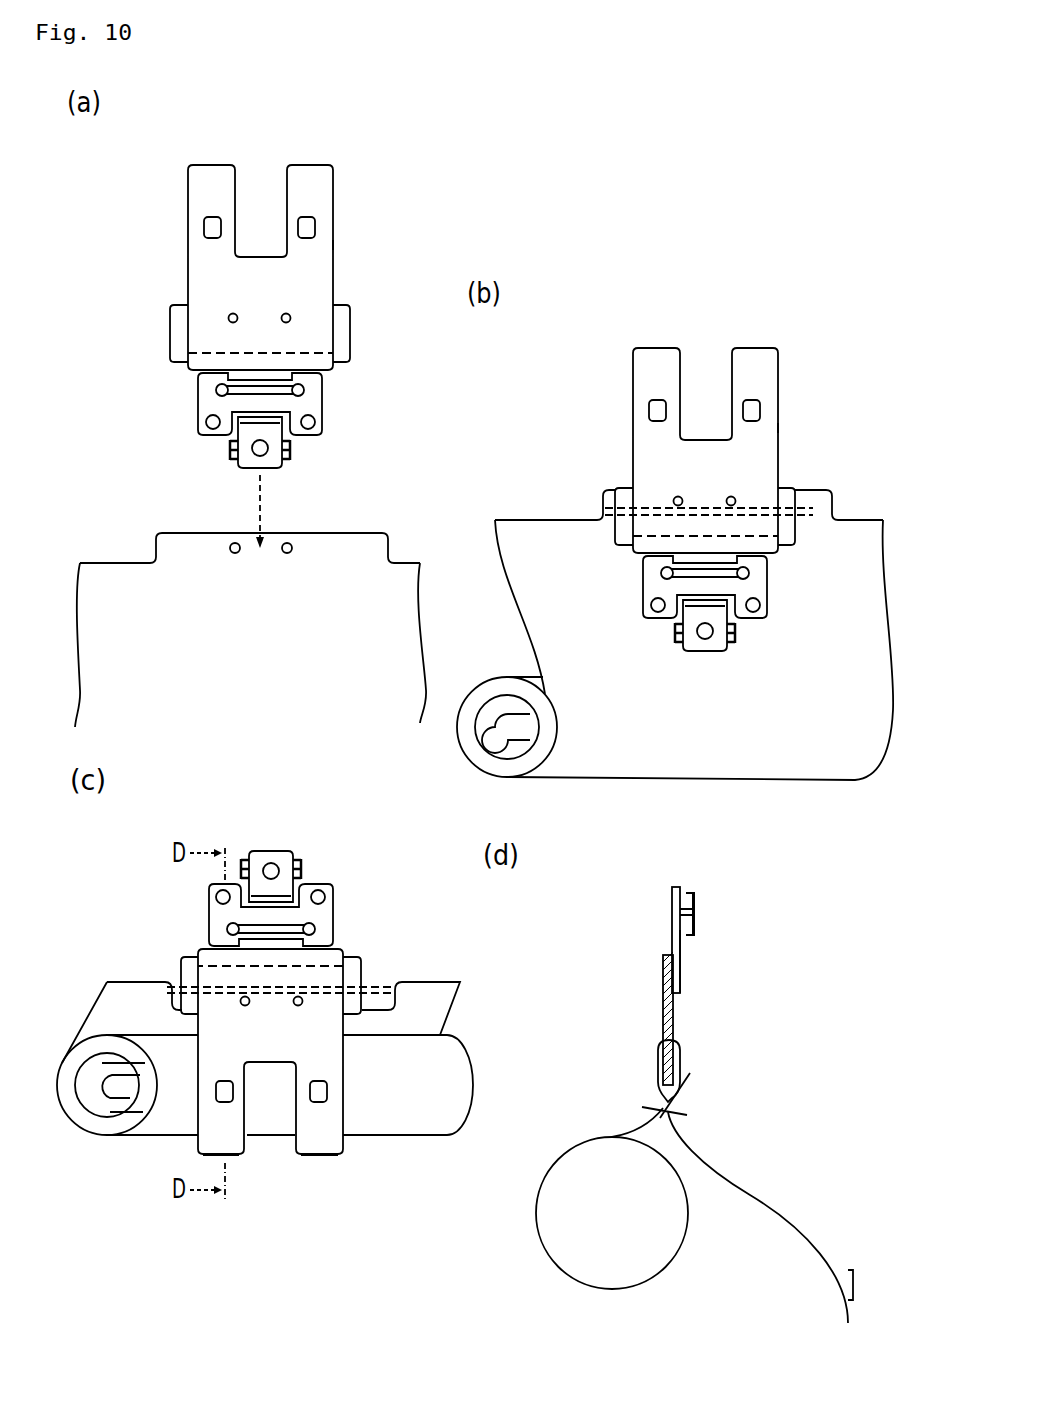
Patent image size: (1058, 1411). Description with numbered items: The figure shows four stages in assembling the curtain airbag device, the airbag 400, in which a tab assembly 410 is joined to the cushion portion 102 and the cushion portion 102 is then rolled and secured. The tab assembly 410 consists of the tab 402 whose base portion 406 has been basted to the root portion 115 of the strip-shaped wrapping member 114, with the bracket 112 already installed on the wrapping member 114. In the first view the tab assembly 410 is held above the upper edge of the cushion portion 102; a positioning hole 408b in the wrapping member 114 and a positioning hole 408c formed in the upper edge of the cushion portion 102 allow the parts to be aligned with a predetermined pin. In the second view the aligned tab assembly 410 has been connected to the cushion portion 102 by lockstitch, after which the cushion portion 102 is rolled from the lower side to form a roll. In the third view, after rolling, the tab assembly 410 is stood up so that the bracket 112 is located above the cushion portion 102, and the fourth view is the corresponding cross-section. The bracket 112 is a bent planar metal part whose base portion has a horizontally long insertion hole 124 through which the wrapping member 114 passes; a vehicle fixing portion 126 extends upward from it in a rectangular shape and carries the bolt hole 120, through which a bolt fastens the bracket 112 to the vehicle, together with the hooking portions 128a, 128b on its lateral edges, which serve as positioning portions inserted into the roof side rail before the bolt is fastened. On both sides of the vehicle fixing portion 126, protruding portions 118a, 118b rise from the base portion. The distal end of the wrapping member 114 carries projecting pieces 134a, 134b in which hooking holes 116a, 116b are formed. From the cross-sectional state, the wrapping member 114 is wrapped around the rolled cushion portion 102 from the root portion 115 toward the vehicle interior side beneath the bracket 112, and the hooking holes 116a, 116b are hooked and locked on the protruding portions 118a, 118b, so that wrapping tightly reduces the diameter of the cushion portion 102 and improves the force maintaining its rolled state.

The airbag 400 is at (140, 188).
The cushion portion 102 is at (113, 560).
The bracket 112 is at (198, 378).
The wrapping member 114 is at (334, 178).
The root portion 115 is at (320, 363).
The hooking hole 116a is at (204, 226).
The hooking hole 116b is at (310, 225).
The protruding portion 118a is at (200, 422).
The protruding portion 118b is at (323, 422).
The bolt hole 120 is at (250, 468).
The insertion hole 124 is at (217, 390).
The vehicle fixing portion 126 is at (281, 466).
The hooking portion 128a is at (229, 450).
The hooking portion 128b is at (292, 450).
The projecting piece 134a is at (208, 164).
The projecting piece 134b is at (313, 164).
The tab 402 is at (350, 308).
The base portion 406 is at (177, 313).
The positioning hole 408b is at (233, 313).
The positioning hole 408c is at (235, 553).
The tab assembly 410 is at (334, 246).